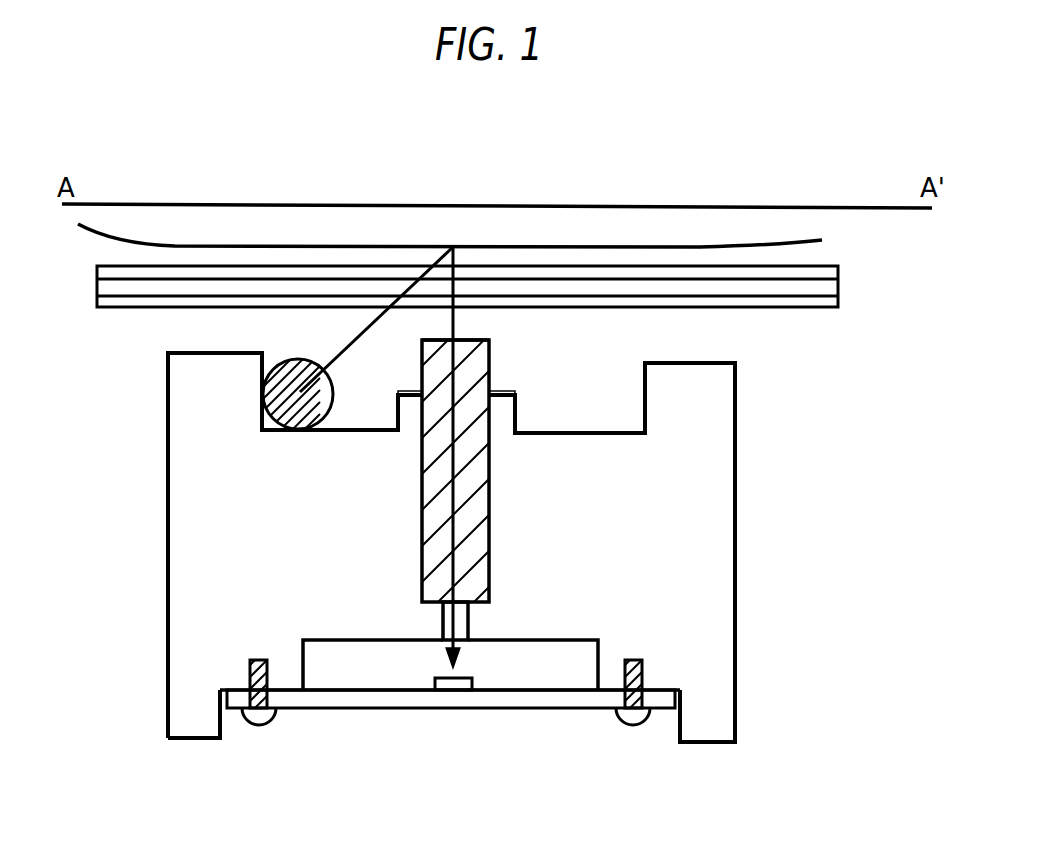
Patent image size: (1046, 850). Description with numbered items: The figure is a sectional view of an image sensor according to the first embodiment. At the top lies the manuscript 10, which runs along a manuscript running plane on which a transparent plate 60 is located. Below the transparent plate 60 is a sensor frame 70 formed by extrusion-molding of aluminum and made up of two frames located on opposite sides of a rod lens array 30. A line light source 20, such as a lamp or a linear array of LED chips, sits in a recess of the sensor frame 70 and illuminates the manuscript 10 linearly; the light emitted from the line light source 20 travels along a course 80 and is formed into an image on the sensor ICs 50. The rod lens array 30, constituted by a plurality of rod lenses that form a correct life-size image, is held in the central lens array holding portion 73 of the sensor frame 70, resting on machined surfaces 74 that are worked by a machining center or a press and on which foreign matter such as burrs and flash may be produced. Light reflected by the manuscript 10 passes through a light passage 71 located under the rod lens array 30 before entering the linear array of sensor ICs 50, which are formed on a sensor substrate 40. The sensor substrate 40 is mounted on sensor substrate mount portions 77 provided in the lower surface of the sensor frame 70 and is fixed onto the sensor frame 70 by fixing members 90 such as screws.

The manuscript 10 is at (797, 243).
The line light source 20 is at (303, 370).
The rod lens array 30 is at (492, 372).
The sensor substrate 40 is at (355, 704).
The sensor ICs 50 is at (453, 692).
The transparent plate 60 is at (823, 286).
The sensor frame 70 is at (700, 500).
The light passage 71 is at (470, 618).
The lens array holding portion 73 is at (490, 480).
The machined surfaces 74 is at (410, 391).
The sensor substrate mount portions 77 is at (305, 680).
The course 80 is at (453, 318).
The fixing members 90 is at (263, 718).